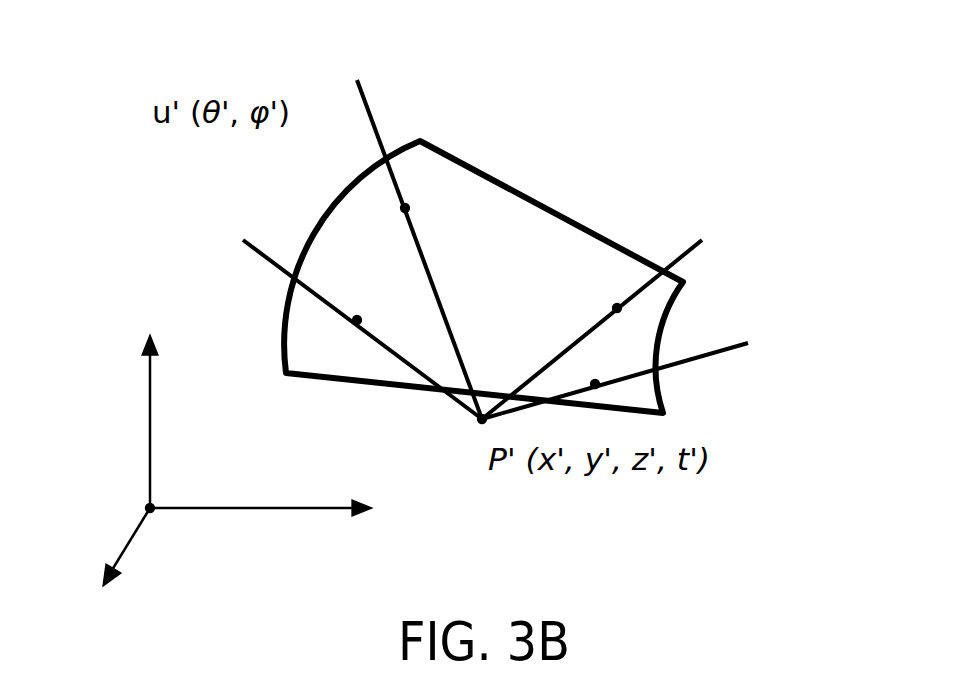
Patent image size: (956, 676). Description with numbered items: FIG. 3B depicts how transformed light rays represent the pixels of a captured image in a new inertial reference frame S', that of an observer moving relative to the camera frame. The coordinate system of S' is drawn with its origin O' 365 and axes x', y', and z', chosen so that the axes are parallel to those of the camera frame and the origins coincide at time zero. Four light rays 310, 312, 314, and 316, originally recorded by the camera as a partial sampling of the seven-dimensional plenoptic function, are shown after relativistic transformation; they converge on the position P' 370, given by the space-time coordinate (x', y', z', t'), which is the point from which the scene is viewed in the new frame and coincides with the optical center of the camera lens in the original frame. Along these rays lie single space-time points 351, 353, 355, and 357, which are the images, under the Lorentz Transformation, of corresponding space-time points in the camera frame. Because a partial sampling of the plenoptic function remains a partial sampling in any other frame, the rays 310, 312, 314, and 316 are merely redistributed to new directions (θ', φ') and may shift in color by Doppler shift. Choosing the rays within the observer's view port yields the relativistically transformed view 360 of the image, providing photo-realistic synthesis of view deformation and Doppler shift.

The light ray 310 is at (282, 268).
The light ray 312 is at (370, 118).
The light ray 314 is at (697, 358).
The light ray 316 is at (682, 257).
The space-time point 351 is at (357, 320).
The space-time point 353 is at (405, 208).
The space-time point 355 is at (595, 383).
The space-time point 357 is at (617, 308).
The relativistically transformed view 360 is at (538, 198).
The origin O' 365 is at (152, 510).
The position P' 370 is at (482, 420).